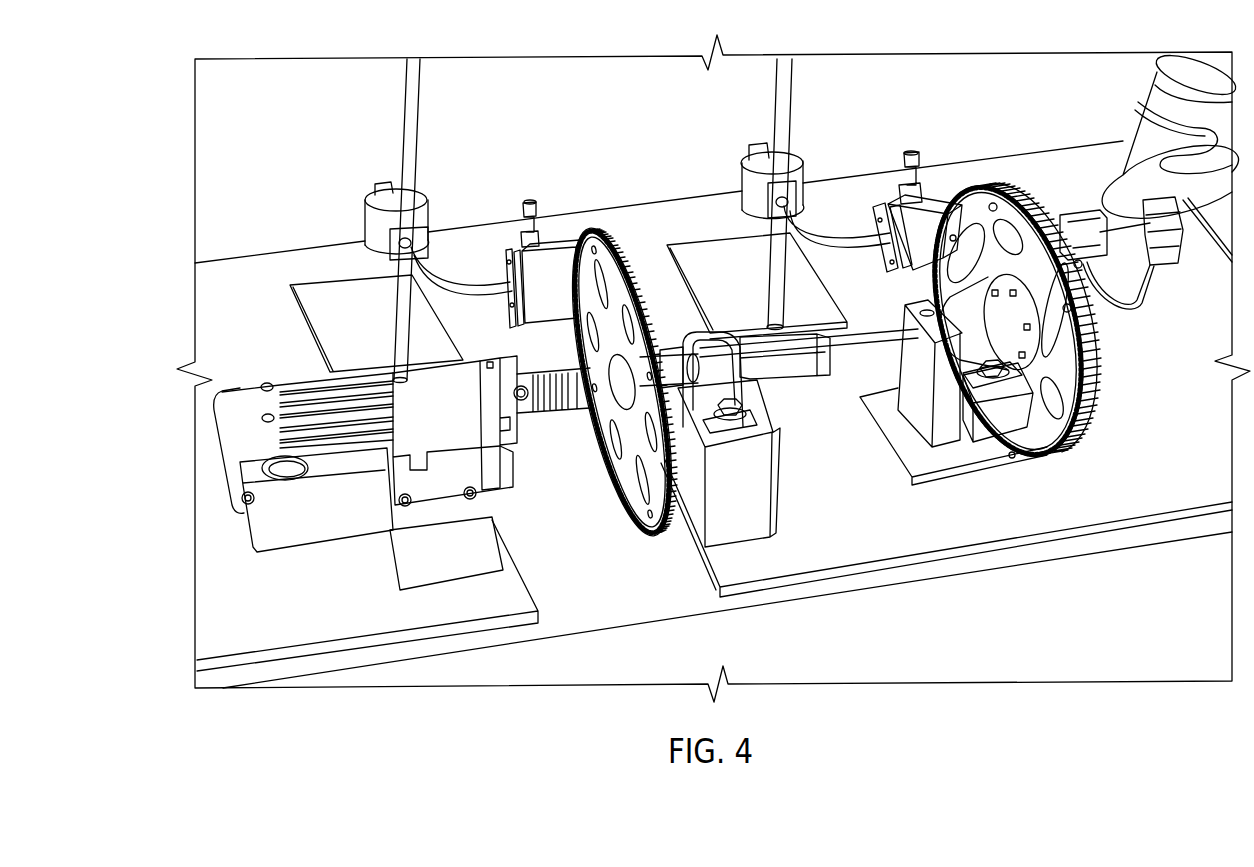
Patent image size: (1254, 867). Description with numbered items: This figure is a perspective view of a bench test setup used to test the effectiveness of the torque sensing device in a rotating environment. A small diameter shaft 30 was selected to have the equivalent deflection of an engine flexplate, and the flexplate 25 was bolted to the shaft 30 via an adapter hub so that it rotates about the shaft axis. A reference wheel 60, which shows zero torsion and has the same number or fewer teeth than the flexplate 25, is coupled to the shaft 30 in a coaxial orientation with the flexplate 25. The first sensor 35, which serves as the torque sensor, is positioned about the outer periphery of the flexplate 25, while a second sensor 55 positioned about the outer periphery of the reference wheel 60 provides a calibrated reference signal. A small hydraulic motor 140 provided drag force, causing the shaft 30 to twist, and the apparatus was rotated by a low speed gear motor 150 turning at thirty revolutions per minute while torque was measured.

The low speed gear motor 150 is at (398, 372).
The first sensor 35 is at (571, 318).
The second sensor 55 is at (519, 230).
The flexplate 25 is at (615, 450).
The shaft 30 is at (793, 353).
The reference wheel 60 is at (992, 200).
The hydraulic motor 140 is at (1080, 213).